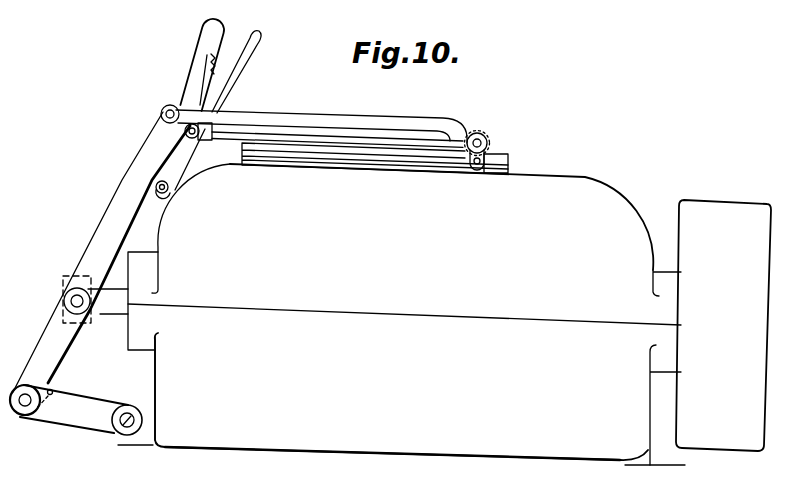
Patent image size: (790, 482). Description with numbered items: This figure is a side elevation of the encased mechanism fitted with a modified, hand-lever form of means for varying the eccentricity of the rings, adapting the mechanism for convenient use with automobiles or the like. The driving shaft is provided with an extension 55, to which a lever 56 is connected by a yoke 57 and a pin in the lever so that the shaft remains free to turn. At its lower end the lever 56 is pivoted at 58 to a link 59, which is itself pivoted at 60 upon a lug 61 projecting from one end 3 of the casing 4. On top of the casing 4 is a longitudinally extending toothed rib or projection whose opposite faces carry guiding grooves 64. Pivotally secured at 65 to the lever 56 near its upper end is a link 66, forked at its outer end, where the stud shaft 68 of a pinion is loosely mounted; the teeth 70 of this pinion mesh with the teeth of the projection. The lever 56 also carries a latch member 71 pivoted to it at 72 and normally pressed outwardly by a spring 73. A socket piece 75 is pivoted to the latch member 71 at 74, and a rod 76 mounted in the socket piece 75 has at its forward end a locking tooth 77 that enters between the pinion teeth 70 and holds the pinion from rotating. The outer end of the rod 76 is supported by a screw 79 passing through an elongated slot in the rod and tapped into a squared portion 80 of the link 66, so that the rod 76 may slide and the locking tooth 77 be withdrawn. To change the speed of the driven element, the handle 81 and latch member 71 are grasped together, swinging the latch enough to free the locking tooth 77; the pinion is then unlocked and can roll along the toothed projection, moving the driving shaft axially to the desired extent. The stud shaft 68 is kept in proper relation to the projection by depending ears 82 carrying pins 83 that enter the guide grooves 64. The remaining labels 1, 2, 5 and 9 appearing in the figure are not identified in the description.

The base 1 is at (396, 444).
The bearing bracket 2 is at (650, 405).
The casing end 3 is at (156, 364).
The casing 4 is at (589, 190).
The bearing boss 5 is at (138, 259).
The drum 9 is at (717, 204).
The shaft extension 55 is at (113, 306).
The operating lever 56 is at (103, 220).
The yoke 57 is at (63, 298).
The pivot 58 is at (53, 393).
The link 59 is at (74, 404).
The pivot 60 is at (126, 424).
The lug 61 is at (145, 438).
The guiding grooves 64 is at (293, 165).
The pivot 65 is at (163, 109).
The link 66 is at (331, 121).
The stud shaft 68 is at (491, 138).
The pinion teeth 70 is at (479, 131).
The latch member 71 is at (240, 73).
The pivot 72 is at (157, 186).
The spring 73 is at (206, 92).
The pivot 74 is at (185, 132).
The socket piece 75 is at (207, 135).
The rod 76 is at (366, 139).
The locking tooth 77 is at (464, 143).
The screw 79 is at (462, 145).
The squared portion 80 is at (448, 119).
The handle 81 is at (202, 50).
The depending ears 82 is at (486, 156).
The pins 83 is at (509, 163).